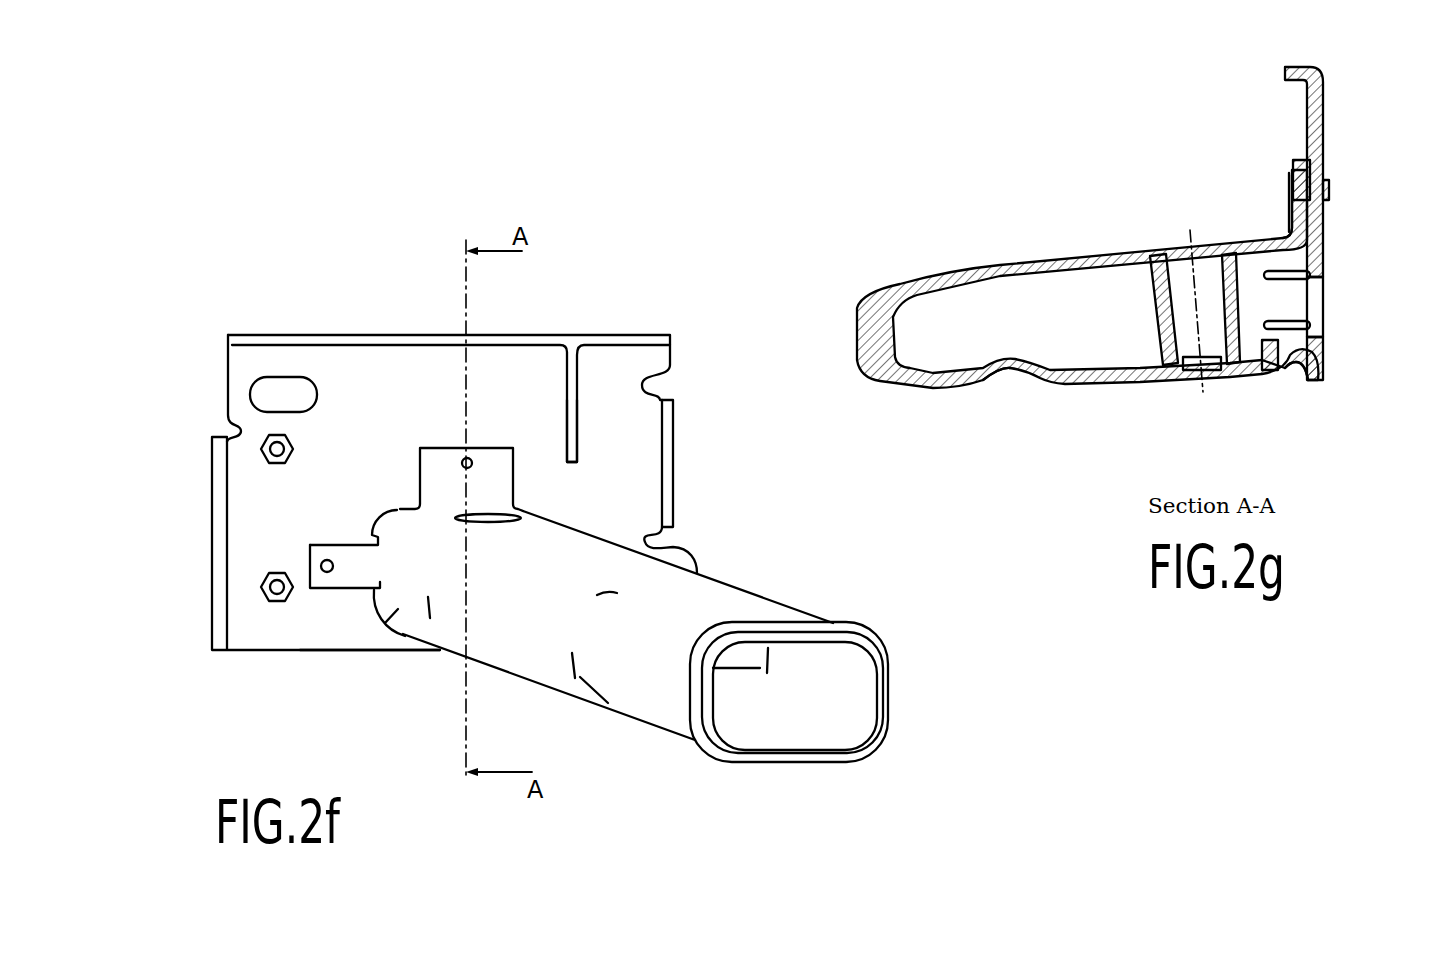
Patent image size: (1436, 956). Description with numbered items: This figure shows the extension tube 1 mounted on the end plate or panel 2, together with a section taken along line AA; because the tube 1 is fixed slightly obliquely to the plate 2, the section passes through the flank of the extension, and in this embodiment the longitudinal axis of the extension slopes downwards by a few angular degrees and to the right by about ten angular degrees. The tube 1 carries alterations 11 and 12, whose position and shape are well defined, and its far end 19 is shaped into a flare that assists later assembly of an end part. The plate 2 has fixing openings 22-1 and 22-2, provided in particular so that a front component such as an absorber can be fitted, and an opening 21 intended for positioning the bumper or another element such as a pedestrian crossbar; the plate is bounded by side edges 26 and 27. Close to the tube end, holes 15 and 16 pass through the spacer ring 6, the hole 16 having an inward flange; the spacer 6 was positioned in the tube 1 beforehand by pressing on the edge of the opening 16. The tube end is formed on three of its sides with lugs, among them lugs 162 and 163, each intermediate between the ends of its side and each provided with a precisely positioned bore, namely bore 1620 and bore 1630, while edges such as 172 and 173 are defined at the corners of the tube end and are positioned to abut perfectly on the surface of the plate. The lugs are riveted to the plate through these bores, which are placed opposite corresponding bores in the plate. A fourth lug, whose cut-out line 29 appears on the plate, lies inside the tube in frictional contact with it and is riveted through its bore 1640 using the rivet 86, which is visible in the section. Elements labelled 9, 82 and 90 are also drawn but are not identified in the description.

In FIG. 2F, the extension tube 1 is at (657, 735).
In FIG. 2G, the extension tube 1 is at (955, 262).
In FIG. 2F, the end plate 2 is at (320, 332).
In FIG. 2G, the end plate 2 is at (1333, 106).
In FIG. 2G, the spacer ring 6 is at (1150, 300).
In FIG. 2F, the fastening web 9 is at (575, 428).
In FIG. 2F, the alteration 11 is at (605, 707).
In FIG. 2F, the alteration 12 is at (437, 655).
In FIG. 2G, the alteration 12 is at (1002, 397).
In FIG. 2G, the hole 15 is at (1178, 250).
In FIG. 2G, the hole 16 is at (1195, 385).
In FIG. 2F, the other end 19 is at (893, 646).
In FIG. 2F, the opening 21 is at (265, 388).
In FIG. 2F, the fixing opening 22-1 is at (262, 446).
In FIG. 2F, the fixing opening 22-2 is at (262, 585).
In FIG. 2F, the side edge 26 is at (220, 522).
In FIG. 2G, the side edge 26 is at (1288, 165).
In FIG. 2F, the side edge 27 is at (670, 488).
In FIG. 2G, the cut-out line 29 is at (1336, 331).
In FIG. 2G, the nut 82 is at (1337, 190).
In FIG. 2G, the rivet 86 is at (1283, 385).
In FIG. 2F, the upper flange 90 is at (623, 337).
In FIG. 2F, the lug 162 is at (440, 450).
In FIG. 2G, the lug 162 is at (1286, 227).
In FIG. 2F, the lug 163 is at (352, 578).
In FIG. 2G, the lug 163 is at (1300, 297).
In FIG. 2F, the edge 172 is at (396, 512).
In FIG. 2F, the edge 173 is at (396, 634).
In FIG. 2F, the bore 1620 is at (466, 462).
In FIG. 2F, the bore 1630 is at (325, 574).
In FIG. 2G, the bore 1640 is at (1265, 375).